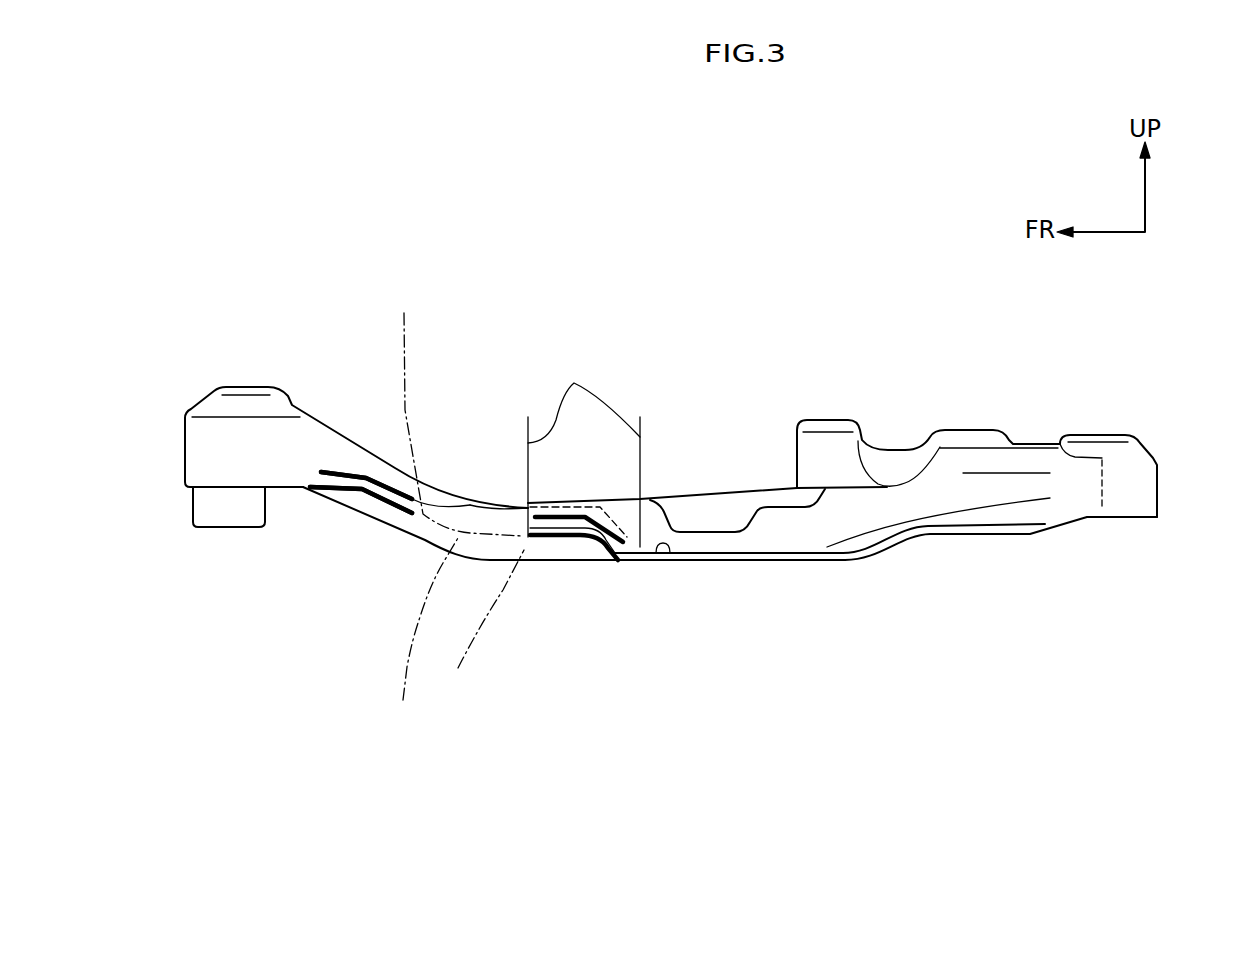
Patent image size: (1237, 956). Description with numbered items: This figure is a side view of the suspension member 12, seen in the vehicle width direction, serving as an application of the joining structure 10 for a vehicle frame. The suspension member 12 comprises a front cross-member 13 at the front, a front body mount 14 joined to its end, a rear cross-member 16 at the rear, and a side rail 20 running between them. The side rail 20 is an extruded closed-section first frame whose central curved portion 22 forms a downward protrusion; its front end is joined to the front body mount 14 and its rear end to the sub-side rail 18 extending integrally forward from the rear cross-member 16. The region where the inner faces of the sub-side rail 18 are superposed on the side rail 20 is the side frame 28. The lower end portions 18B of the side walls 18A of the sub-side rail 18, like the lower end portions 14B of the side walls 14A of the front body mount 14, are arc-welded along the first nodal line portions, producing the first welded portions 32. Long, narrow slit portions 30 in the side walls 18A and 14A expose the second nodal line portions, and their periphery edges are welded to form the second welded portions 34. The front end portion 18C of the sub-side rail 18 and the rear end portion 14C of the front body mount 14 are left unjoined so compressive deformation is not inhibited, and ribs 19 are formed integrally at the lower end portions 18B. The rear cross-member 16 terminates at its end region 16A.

The joining structure 10 is at (615, 570).
The suspension member 12 is at (719, 326).
The front cross-member 13 is at (197, 527).
The front body mount 14 is at (252, 388).
The side wall 14A is at (351, 458).
The lower end portion 14B is at (388, 530).
The rear end portion 14C is at (443, 468).
The rear cross-member 16 is at (1153, 458).
The rear end cap 16A is at (1102, 430).
The sub-side rail 18 is at (652, 500).
The side wall 18A is at (657, 520).
The lower end portion 18B is at (563, 560).
The front end portion 18C is at (516, 478).
The rib 19 is at (672, 560).
The side rail 20 is at (478, 504).
The curved portion 22 is at (433, 553).
The side frame 28 is at (584, 403).
The slit portion 30 is at (338, 462).
The first welded portion 32 is at (357, 489).
The second welded portion 34 is at (373, 475).